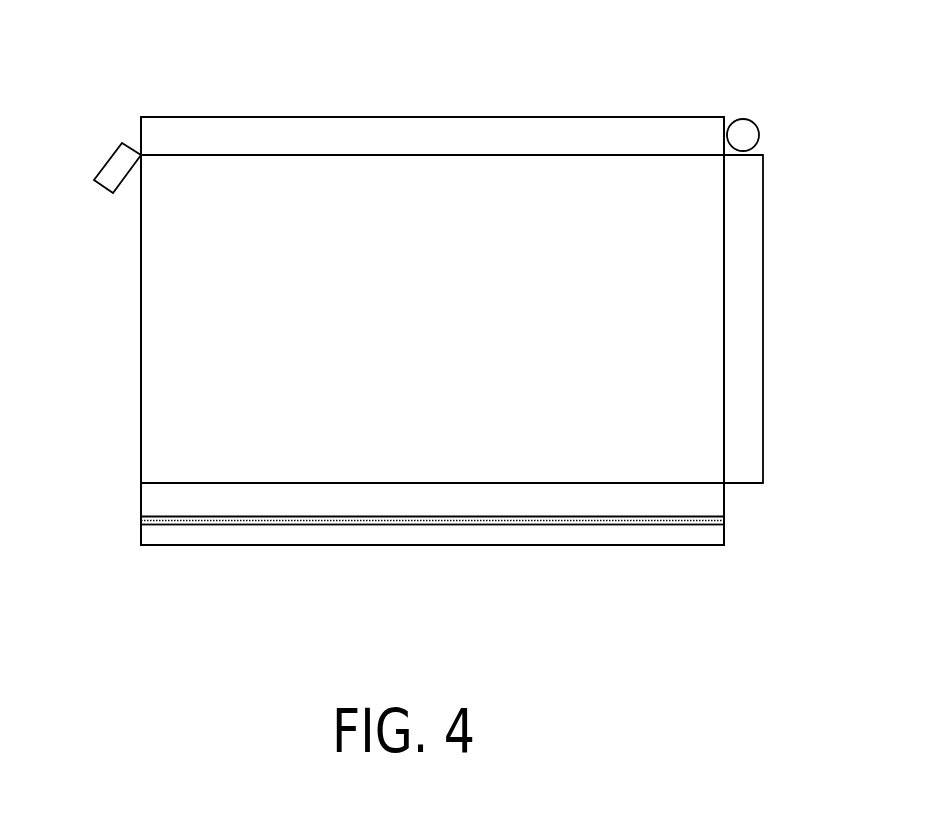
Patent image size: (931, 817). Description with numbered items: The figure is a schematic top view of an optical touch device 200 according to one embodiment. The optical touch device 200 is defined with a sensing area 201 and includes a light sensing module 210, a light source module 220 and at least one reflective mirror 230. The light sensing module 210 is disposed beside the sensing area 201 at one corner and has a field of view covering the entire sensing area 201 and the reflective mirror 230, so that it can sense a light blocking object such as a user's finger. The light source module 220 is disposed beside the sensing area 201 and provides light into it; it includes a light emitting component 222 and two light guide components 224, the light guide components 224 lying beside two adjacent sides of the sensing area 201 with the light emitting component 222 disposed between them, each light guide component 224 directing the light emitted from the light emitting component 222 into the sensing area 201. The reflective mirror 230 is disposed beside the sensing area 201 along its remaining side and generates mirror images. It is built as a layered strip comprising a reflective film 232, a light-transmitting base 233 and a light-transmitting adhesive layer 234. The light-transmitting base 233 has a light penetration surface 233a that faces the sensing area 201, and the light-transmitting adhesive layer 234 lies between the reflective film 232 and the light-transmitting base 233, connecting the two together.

The optical touch device 200 is at (782, 608).
The sensing area 201 is at (173, 323).
The light sensing module 210 is at (116, 163).
The light source module 220 is at (790, 50).
The light emitting component 222 is at (741, 130).
The light guide component 224 is at (565, 128).
The reflective mirror 230 is at (150, 612).
The reflective film 232 is at (365, 542).
The light-transmitting base 233 is at (277, 508).
The light penetration surface 233a is at (178, 486).
The light-transmitting adhesive layer 234 is at (187, 520).